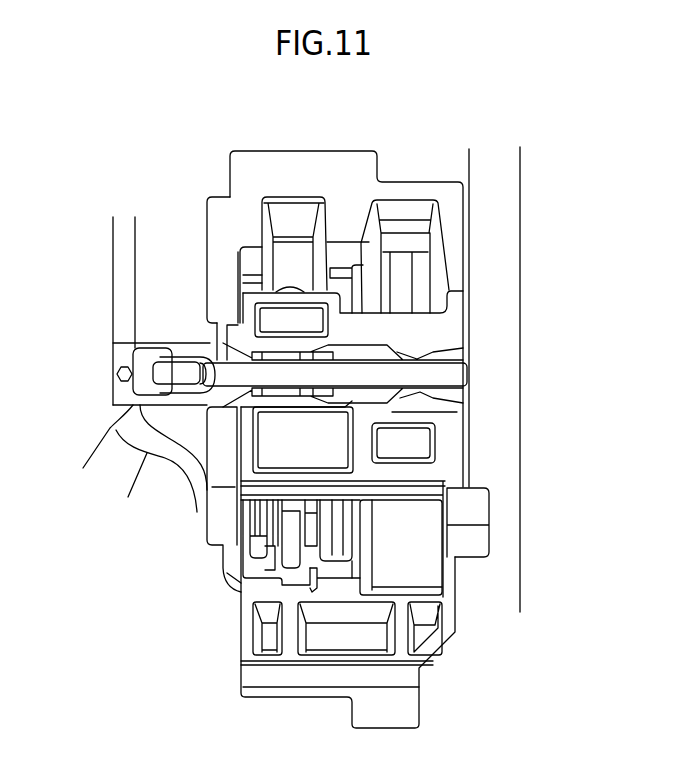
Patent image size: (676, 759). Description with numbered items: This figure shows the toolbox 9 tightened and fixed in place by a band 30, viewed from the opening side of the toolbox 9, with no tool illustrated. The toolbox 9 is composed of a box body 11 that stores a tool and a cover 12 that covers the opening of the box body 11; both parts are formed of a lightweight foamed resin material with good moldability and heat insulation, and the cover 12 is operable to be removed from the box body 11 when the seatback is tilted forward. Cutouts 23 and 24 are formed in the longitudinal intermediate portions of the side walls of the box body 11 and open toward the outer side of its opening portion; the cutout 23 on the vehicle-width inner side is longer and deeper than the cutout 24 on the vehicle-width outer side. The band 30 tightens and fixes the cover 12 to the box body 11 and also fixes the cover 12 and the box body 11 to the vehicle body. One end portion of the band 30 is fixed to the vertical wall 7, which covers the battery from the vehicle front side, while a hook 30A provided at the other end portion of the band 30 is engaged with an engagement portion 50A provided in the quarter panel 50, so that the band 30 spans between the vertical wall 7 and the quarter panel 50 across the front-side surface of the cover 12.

The vertical wall 7 is at (495, 177).
The toolbox 9 is at (190, 160).
The box body 11 is at (368, 170).
The cover 12 is at (454, 318).
The cutout 23 is at (462, 309).
The cutout 24 is at (213, 330).
The band 30 is at (441, 373).
The hook 30A is at (198, 356).
The quarter panel 50 is at (123, 243).
The engagement portion 50A is at (145, 393).